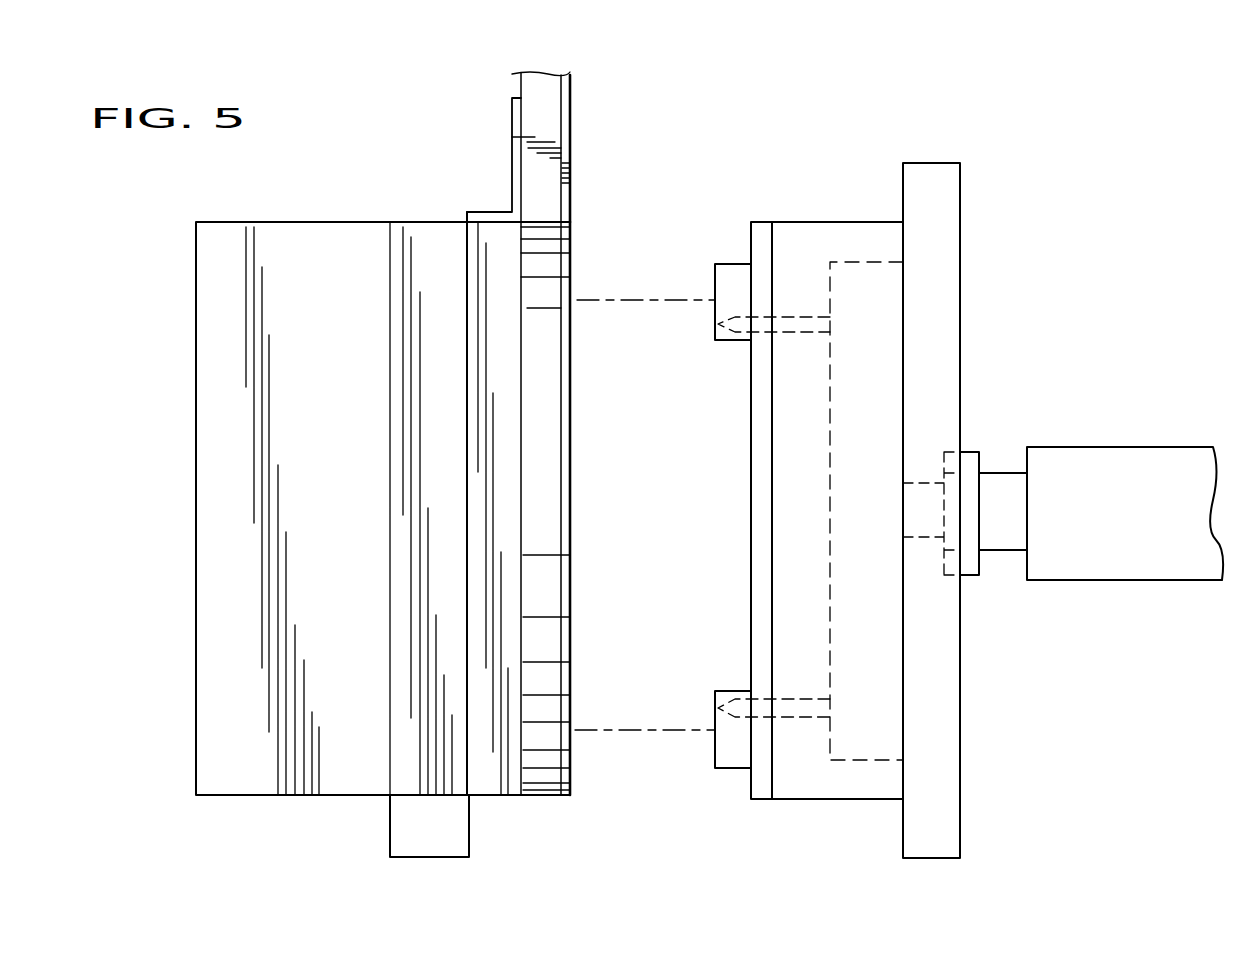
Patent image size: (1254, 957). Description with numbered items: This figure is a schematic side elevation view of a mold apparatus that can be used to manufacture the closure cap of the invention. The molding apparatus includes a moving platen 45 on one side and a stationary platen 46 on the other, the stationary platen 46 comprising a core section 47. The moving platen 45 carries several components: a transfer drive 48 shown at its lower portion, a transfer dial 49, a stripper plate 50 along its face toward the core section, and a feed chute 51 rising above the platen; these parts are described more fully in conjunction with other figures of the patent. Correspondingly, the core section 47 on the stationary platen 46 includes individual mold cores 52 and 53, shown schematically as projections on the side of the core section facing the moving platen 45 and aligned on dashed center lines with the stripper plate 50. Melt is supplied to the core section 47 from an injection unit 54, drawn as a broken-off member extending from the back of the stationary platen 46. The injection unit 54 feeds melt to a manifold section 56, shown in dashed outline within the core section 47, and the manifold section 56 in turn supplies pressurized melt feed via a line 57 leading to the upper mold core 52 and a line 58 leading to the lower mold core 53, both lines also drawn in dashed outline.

The moving platen 45 is at (186, 580).
The stationary platen 46 is at (975, 162).
The core section 47 is at (761, 222).
The transfer drive 48 is at (454, 829).
The transfer dial 49 is at (540, 800).
The stripper plate 50 is at (573, 778).
The feed chute 51 is at (560, 80).
The mold core 52 is at (715, 268).
The mold core 53 is at (730, 752).
The injection unit 54 is at (1135, 566).
The manifold section 56 is at (887, 350).
The line 57 is at (792, 320).
The line 58 is at (793, 712).